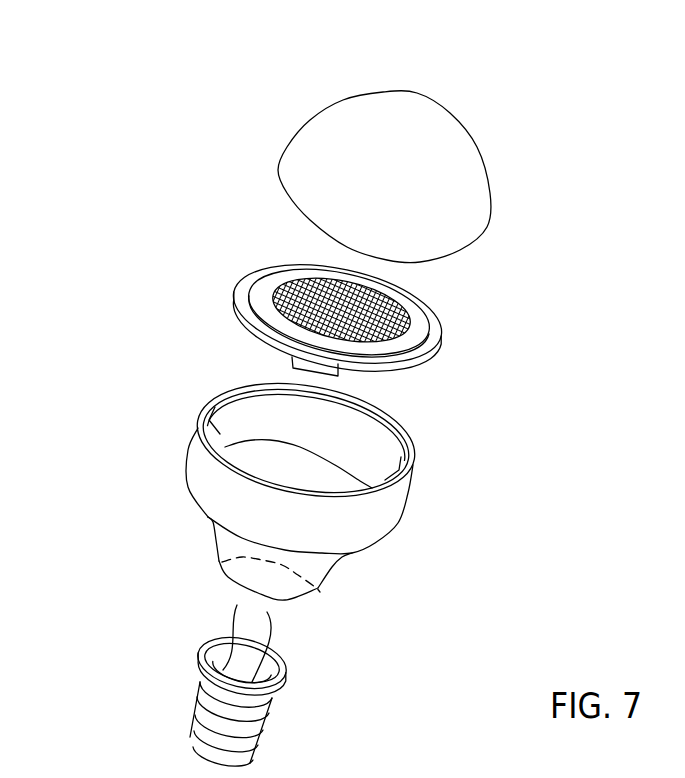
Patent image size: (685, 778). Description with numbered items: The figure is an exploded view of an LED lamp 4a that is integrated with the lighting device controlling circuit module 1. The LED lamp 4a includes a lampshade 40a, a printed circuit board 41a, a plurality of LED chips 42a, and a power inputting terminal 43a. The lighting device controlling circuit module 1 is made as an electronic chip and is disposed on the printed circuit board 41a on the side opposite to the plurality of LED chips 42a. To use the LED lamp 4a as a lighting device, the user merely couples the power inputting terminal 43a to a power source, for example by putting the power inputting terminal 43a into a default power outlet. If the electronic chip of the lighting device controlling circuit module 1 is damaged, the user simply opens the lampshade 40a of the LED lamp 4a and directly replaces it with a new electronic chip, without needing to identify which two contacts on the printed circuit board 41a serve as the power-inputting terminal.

The LED lamp 4a is at (217, 169).
The lampshade 40a is at (338, 133).
The printed circuit board 41a is at (422, 365).
The LED chips 42a is at (305, 308).
The power inputting terminal 43a is at (207, 759).
The lighting device controlling circuit module 1 is at (284, 367).